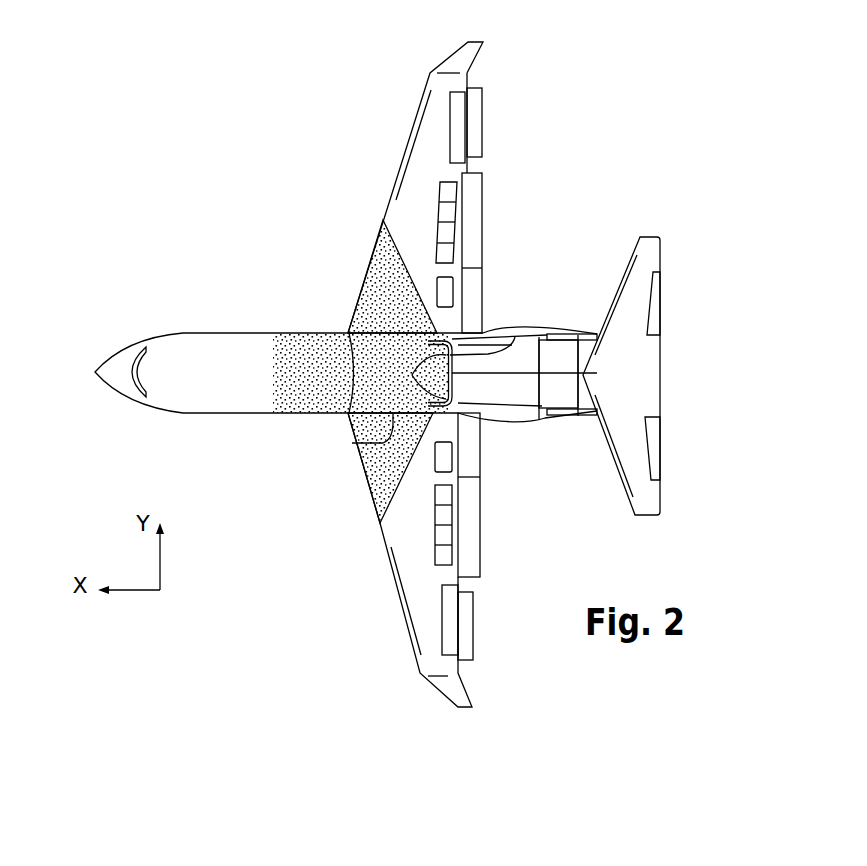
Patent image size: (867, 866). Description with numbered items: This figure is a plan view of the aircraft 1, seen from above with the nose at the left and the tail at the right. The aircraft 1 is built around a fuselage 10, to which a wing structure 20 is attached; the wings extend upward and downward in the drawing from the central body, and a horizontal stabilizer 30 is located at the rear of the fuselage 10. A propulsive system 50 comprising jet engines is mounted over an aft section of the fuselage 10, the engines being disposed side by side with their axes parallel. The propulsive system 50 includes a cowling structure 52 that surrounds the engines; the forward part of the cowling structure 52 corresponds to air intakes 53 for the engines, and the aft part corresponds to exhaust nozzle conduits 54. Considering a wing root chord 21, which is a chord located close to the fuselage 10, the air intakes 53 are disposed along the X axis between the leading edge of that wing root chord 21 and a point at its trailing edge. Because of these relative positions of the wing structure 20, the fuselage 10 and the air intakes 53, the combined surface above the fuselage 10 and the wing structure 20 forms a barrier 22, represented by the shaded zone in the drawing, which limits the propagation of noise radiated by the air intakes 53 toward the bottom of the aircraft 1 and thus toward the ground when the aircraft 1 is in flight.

The aircraft 1 is at (115, 318).
The fuselage 10 is at (231, 331).
The wing structure 20 is at (383, 151).
The wing root chord 21 is at (447, 325).
The barrier 22 is at (388, 283).
The horizontal stabilizer 30 is at (693, 354).
The propulsive system 50 is at (574, 297).
The cowling structure 52 is at (506, 393).
The air intakes 53 is at (453, 358).
The exhaust nozzle conduits 54 is at (556, 386).